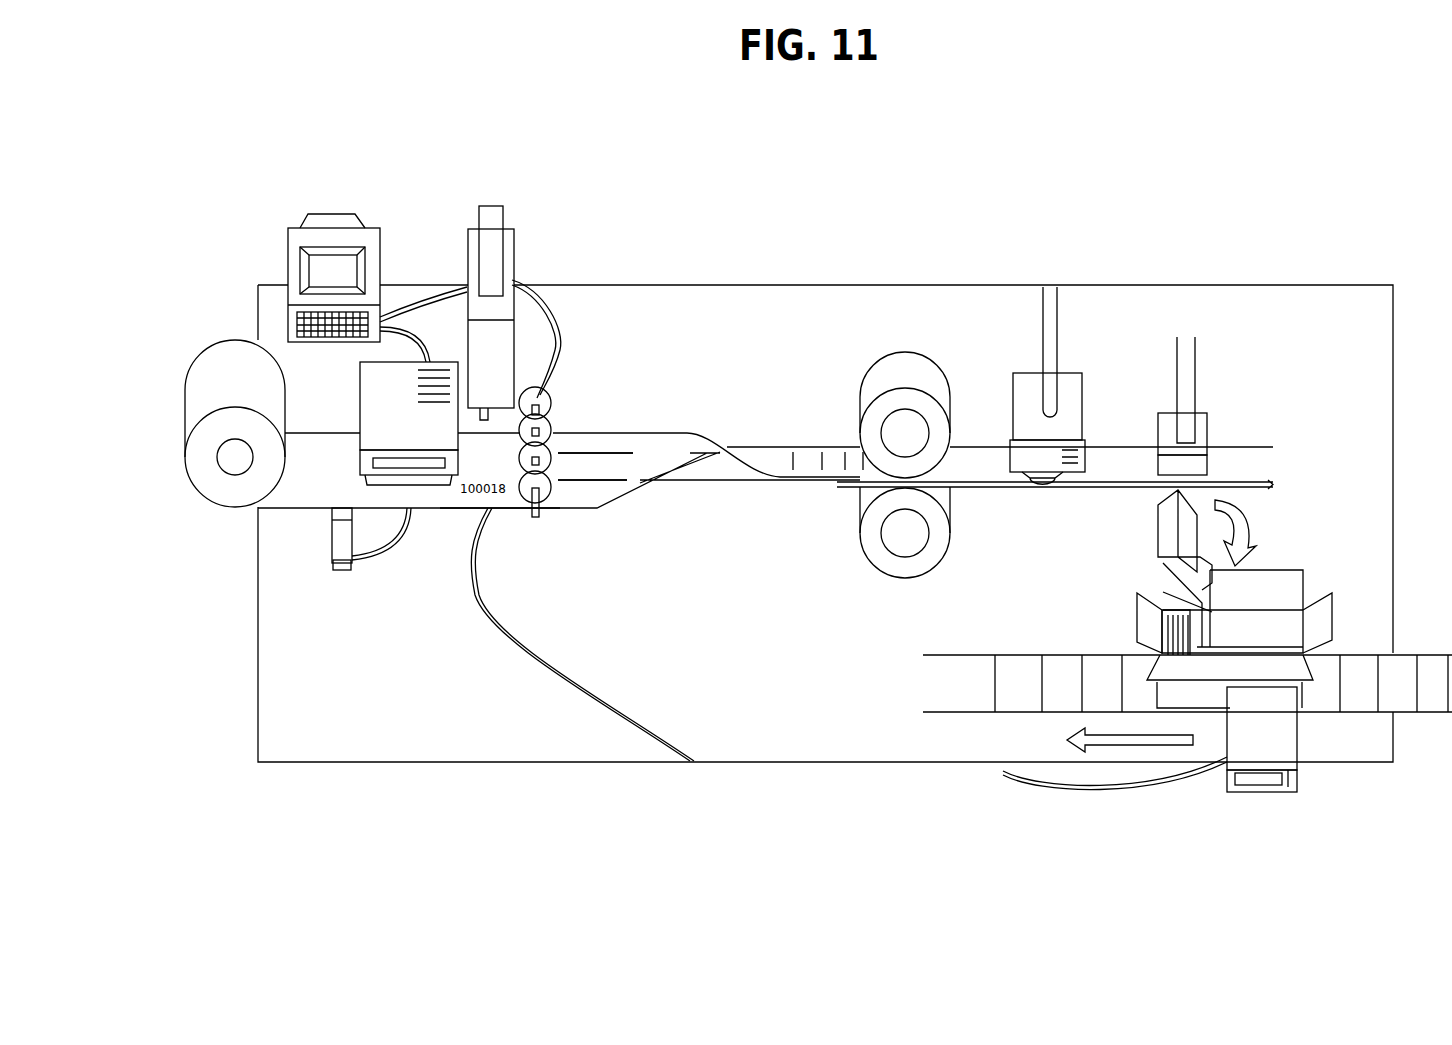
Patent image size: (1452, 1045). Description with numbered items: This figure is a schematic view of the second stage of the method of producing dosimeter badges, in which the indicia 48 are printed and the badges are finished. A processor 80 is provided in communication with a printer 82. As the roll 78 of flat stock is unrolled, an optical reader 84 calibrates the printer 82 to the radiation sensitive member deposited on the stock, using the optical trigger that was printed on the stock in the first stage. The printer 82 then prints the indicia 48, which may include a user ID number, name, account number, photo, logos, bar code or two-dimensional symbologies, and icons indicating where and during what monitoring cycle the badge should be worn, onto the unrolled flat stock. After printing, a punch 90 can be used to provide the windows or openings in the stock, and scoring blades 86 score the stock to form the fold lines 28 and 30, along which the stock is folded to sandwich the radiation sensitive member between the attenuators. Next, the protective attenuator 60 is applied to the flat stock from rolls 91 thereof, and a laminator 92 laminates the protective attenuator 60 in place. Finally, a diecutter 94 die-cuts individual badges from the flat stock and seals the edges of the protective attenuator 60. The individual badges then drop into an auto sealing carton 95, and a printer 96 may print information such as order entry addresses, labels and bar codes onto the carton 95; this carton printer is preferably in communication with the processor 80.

The roll 78 is at (212, 483).
The processor 80 is at (363, 200).
The printer 82 is at (387, 407).
The optical reader 84 is at (342, 565).
The scoring blades 86 is at (570, 393).
The punch 90 is at (508, 262).
The fold line 28 is at (633, 453).
The fold line 30 is at (577, 480).
The indicia 48 is at (463, 500).
The protective attenuator 60 is at (867, 433).
The rolls 91 is at (903, 363).
The laminator 92 is at (1067, 395).
The diecutter 94 is at (1200, 443).
The auto sealing carton 95 is at (1280, 623).
The printer 96 is at (1275, 738).